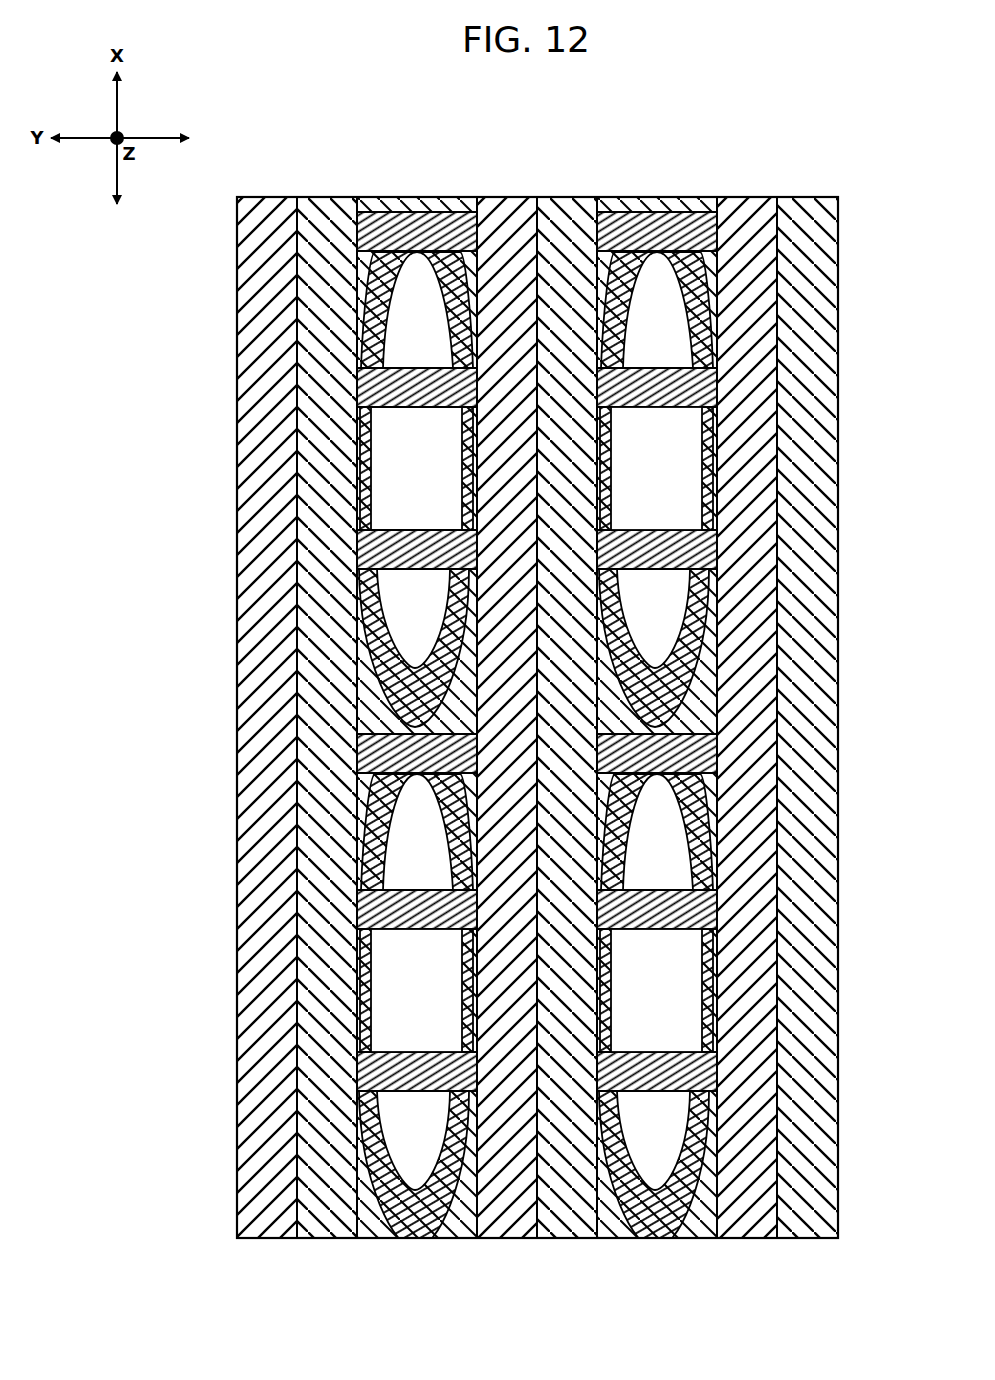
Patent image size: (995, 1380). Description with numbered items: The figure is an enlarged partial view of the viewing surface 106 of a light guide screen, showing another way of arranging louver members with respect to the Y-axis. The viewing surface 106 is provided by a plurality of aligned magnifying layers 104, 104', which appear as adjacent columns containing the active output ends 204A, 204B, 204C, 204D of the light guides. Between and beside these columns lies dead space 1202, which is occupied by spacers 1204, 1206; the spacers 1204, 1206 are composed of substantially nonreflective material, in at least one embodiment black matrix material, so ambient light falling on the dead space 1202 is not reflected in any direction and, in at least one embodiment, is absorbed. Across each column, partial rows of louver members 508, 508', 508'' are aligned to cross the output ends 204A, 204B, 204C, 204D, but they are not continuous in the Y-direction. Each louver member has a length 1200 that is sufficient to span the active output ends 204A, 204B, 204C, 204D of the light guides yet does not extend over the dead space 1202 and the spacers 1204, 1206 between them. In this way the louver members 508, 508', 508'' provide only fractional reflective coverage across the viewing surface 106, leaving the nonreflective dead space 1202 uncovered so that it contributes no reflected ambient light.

The dead space 1202 is at (350, 188).
The magnifying layer 104 is at (417, 697).
The magnifying layer 104' is at (657, 694).
The louver member 508 is at (305, 240).
The louver member 508' is at (301, 392).
The louver member 508'' is at (297, 556).
The output end 204A is at (416, 468).
The output end 204B is at (656, 468).
The output end 204C is at (416, 990).
The output end 204D is at (656, 990).
The length 1200 is at (410, 586).
The viewing surface 106 is at (222, 797).
The spacer 1204 is at (497, 1224).
The spacer 1206 is at (573, 1224).